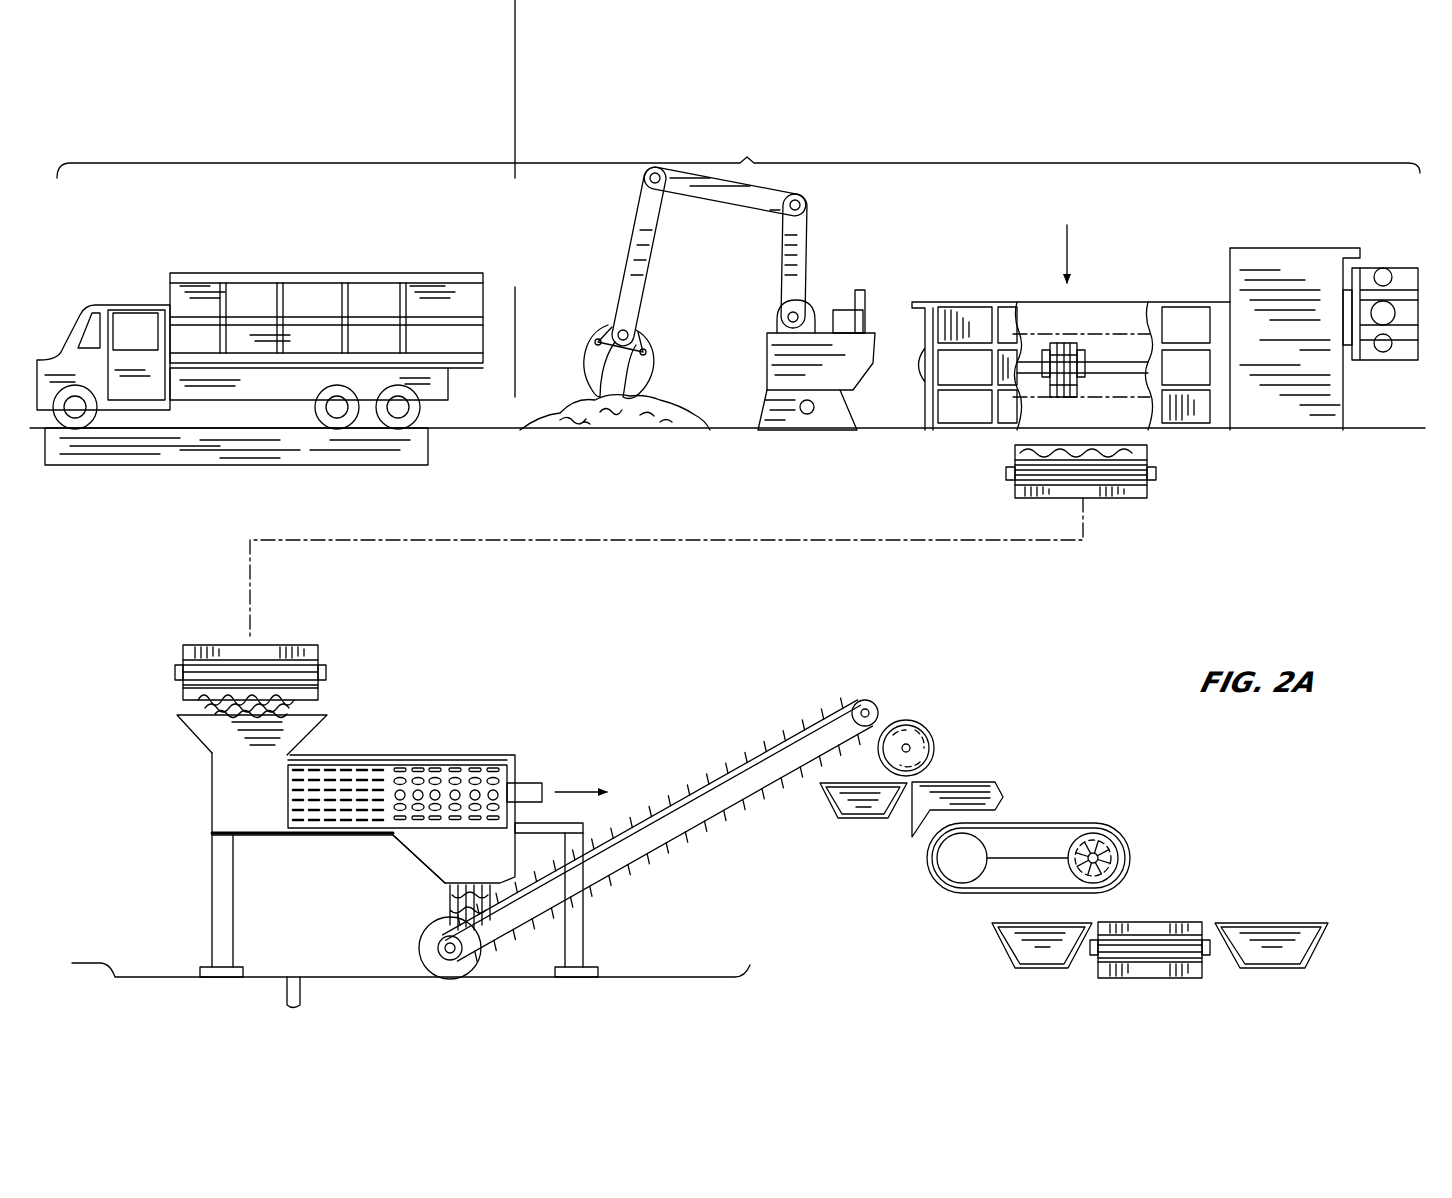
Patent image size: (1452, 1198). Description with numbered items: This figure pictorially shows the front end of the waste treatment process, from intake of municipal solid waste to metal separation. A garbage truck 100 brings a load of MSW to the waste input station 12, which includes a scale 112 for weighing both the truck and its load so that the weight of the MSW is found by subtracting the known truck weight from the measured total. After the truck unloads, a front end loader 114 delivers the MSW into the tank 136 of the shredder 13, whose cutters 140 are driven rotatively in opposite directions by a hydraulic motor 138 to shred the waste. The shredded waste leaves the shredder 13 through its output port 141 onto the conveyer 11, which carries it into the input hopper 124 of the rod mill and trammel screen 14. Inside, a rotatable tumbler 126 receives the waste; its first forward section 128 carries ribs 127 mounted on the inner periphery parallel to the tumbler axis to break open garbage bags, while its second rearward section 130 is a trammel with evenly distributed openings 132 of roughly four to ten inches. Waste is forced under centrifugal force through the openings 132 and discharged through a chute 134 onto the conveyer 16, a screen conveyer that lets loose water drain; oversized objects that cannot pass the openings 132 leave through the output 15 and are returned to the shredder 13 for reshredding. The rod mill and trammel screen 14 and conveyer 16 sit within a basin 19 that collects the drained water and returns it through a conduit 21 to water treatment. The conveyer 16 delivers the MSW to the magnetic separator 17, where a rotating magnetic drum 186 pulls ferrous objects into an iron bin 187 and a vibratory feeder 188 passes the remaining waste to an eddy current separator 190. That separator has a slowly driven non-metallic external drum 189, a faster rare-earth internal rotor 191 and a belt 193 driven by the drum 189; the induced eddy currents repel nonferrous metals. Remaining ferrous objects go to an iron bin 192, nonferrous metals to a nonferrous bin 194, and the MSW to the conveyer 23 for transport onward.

The waste input station 12 is at (738, 149).
The truck 100 is at (309, 268).
The scale 112 is at (430, 450).
The front end loader 114 is at (760, 325).
The shredder 13 is at (970, 297).
The tank 136 is at (955, 403).
The output port 141 is at (1035, 410).
The cutters 140 is at (1078, 388).
The hydraulic motor 138 is at (1400, 268).
The conveyer 11 is at (1125, 490).
The rod mill and trammel screen 14 is at (185, 640).
The input hopper 124 is at (290, 757).
The rotatable tumbler 126 is at (285, 810).
The ribs 127 is at (305, 830).
The first forward section 128 is at (365, 757).
The second rearward section 130 is at (478, 760).
The openings 132 is at (435, 800).
The chute 134 is at (428, 870).
The output 15 is at (535, 785).
The conveyer 16 is at (658, 855).
The basin 19 is at (268, 977).
The conduit 21 is at (302, 988).
The magnetic drum 186 is at (920, 720).
The magnetic separator 17 is at (1050, 751).
The iron bin 187 is at (875, 818).
The vibratory feeder 188 is at (1004, 787).
The eddy current separator 190 is at (1063, 825).
The external drum 189 is at (1070, 860).
The internal rotor 191 is at (1130, 862).
The belt 193 is at (958, 893).
The iron bin 192 is at (1040, 923).
The conveyer 23 is at (1152, 968).
The nonferrous bin 194 is at (1272, 923).